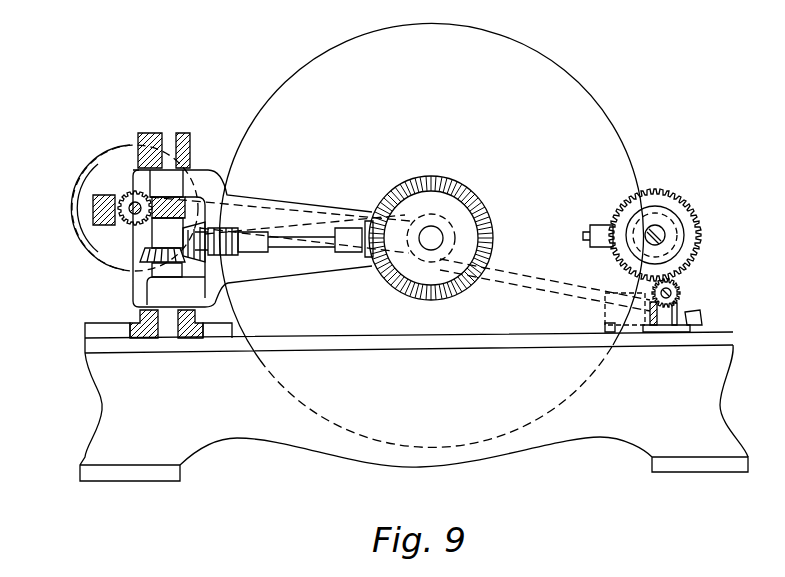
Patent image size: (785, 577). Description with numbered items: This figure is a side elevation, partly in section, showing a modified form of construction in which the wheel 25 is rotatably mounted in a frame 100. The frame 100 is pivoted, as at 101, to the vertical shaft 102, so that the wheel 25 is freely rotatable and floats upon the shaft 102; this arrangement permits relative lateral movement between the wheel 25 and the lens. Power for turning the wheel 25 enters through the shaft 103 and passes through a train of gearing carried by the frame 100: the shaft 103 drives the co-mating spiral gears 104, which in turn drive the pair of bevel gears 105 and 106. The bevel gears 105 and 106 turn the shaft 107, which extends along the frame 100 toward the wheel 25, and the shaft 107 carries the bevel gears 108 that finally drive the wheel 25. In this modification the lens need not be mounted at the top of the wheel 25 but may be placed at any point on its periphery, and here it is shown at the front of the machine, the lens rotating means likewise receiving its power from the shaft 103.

The wheel 25 is at (532, 75).
The frame 100 is at (277, 212).
The pivot 101 is at (168, 182).
The vertical shaft 102 is at (165, 230).
The shaft 103 is at (128, 208).
The co-mating spiral gears 104 is at (152, 202).
The bevel gear 105 is at (186, 263).
The bevel gear 106 is at (224, 255).
The shaft 107 is at (288, 245).
The bevel gears 108 is at (372, 220).